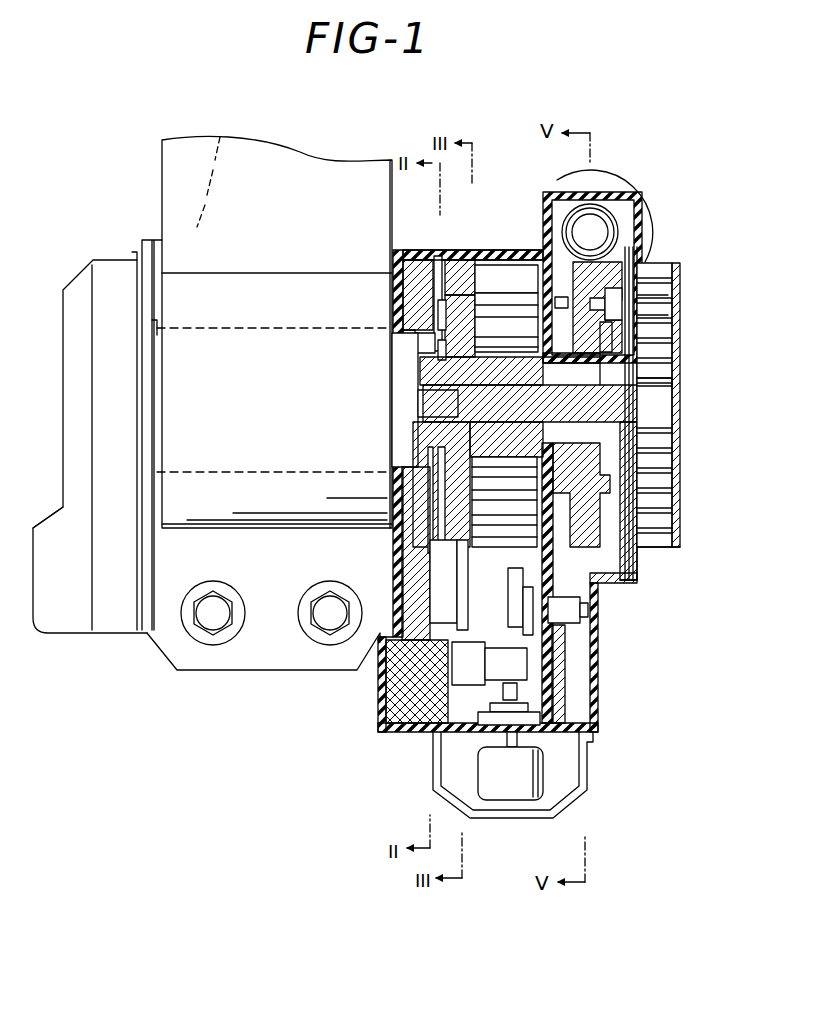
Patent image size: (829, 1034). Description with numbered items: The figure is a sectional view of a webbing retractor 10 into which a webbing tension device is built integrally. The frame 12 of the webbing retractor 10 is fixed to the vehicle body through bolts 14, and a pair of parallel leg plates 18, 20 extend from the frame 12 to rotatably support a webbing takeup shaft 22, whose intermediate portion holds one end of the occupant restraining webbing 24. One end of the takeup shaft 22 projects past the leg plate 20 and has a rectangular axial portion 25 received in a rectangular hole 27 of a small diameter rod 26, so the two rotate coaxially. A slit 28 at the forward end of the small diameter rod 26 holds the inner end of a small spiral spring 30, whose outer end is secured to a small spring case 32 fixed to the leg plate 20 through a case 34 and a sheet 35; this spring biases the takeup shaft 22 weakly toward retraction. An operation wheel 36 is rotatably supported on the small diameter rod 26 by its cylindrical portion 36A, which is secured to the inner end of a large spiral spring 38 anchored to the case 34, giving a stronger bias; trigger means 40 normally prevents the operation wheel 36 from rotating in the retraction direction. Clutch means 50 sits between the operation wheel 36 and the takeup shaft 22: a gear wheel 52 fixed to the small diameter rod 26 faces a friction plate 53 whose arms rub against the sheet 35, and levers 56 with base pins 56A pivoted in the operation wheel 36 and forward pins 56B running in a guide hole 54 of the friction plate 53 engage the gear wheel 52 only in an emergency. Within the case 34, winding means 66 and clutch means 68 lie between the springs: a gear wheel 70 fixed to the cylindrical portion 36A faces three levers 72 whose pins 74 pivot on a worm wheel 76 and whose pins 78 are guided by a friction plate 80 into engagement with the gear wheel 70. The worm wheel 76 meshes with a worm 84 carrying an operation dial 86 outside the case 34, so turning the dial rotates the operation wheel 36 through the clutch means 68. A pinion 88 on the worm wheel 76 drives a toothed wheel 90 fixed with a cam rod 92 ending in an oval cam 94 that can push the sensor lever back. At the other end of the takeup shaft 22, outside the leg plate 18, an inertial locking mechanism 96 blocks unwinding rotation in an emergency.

The webbing retractor 10 is at (143, 183).
The frame 12 is at (228, 660).
The bolts 14 is at (320, 592).
The leg plate 18 is at (137, 622).
The leg plate 20 is at (393, 570).
The webbing takeup shaft 22 is at (303, 328).
The occupant restraining webbing 24 is at (393, 210).
The rectangular axial portion 25 is at (440, 410).
The small diameter rod 26 is at (623, 398).
The rectangular hole 27 is at (427, 405).
The slit 28 is at (667, 416).
The small spiral spring 30 is at (657, 333).
The small spring case 32 is at (682, 457).
The case 34 is at (493, 252).
The sheet 35 is at (417, 270).
The operation wheel 36 is at (457, 270).
The cylindrical portion 36A is at (488, 357).
The large spiral spring 38 is at (505, 258).
The trigger means 40 is at (444, 634).
The clutch means 50 is at (457, 262).
The gear wheel 52 is at (470, 520).
The friction plate 53 is at (413, 282).
The guide hole 54 is at (440, 335).
The levers 56 is at (462, 300).
The pin 56A is at (438, 312).
The pin 56B is at (432, 355).
The winding means 66 is at (623, 216).
The clutch means 68 is at (608, 580).
The gear wheel 70 is at (673, 352).
The levers 72 is at (645, 297).
The pin 74 is at (617, 290).
The worm wheel 76 is at (636, 274).
The pin 78 is at (648, 312).
The friction plate 80 is at (630, 258).
The worm 84 is at (603, 206).
The operation dial 86 is at (558, 181).
The pinion 88 is at (580, 306).
The toothed wheel 90 is at (565, 688).
The cam rod 92 is at (580, 617).
The oval cam 94 is at (510, 594).
The inertial locking mechanism 96 is at (64, 618).